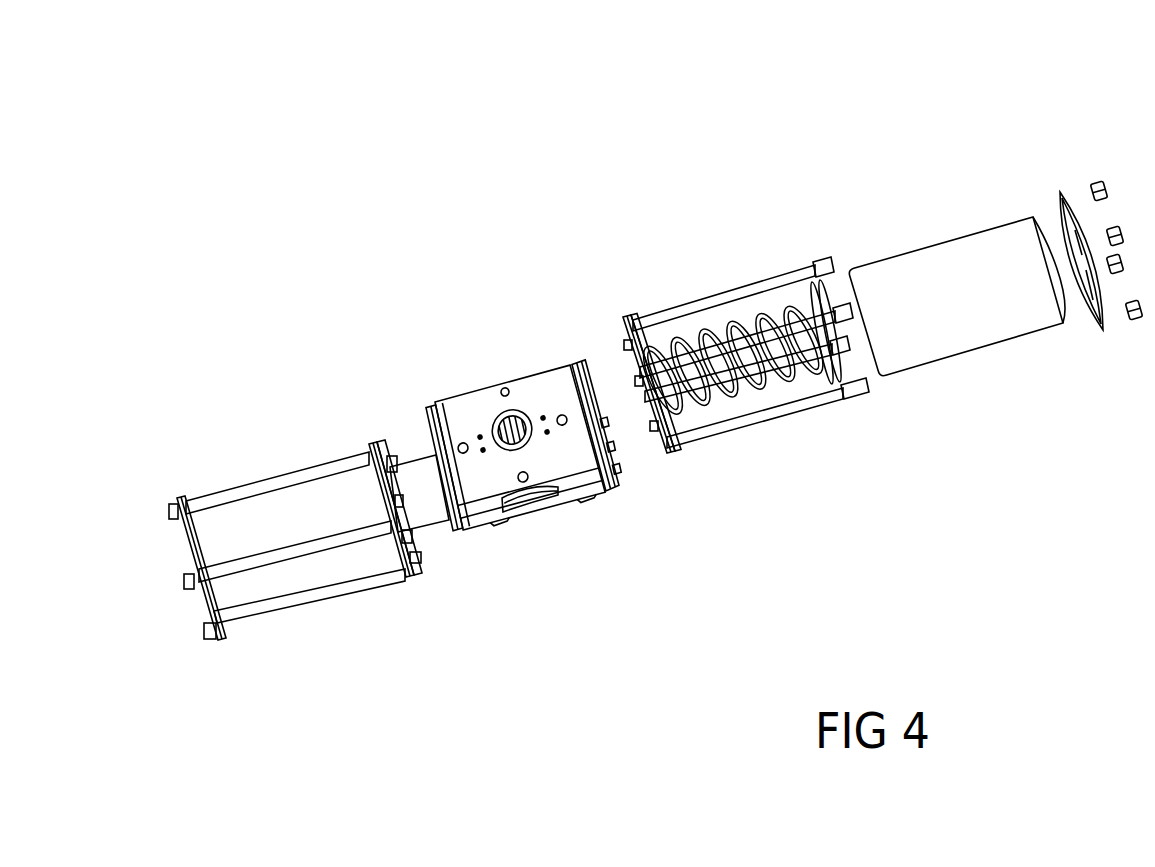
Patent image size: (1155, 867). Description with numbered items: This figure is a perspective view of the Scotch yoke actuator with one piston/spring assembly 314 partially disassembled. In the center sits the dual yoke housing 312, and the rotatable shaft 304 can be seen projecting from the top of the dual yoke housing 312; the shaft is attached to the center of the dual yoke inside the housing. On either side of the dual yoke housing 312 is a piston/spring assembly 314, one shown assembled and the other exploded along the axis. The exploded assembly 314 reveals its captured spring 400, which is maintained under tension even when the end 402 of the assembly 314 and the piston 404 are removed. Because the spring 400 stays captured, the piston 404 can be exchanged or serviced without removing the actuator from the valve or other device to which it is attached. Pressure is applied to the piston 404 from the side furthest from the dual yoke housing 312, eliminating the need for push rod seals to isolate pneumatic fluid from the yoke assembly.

The piston/spring assembly 314 is at (257, 478).
The rotatable shaft 304 is at (504, 410).
The dual yoke housing 312 is at (528, 373).
The captured spring 400 is at (791, 312).
The piston 404 is at (958, 233).
The end of the assembly 402 is at (1060, 193).